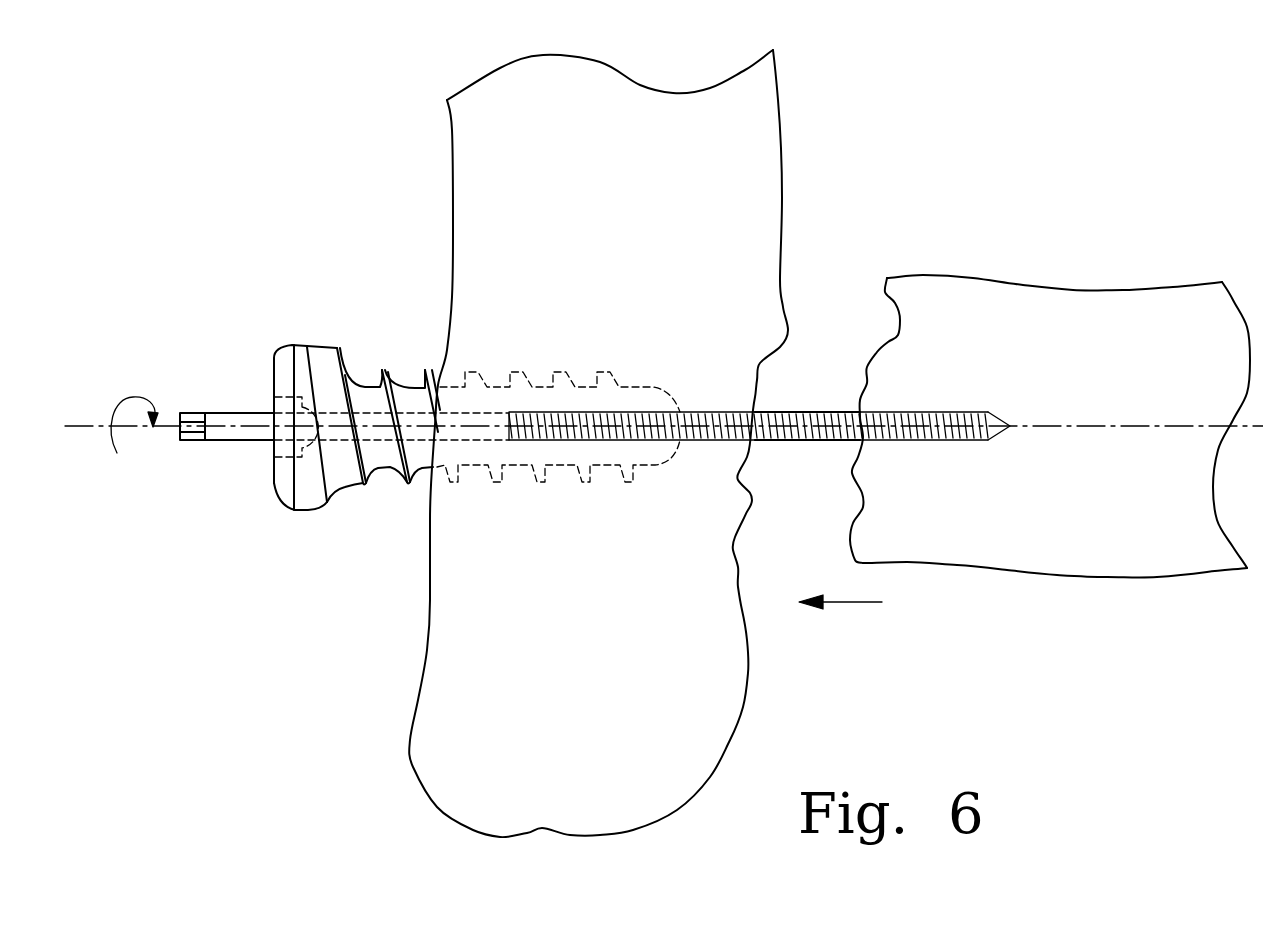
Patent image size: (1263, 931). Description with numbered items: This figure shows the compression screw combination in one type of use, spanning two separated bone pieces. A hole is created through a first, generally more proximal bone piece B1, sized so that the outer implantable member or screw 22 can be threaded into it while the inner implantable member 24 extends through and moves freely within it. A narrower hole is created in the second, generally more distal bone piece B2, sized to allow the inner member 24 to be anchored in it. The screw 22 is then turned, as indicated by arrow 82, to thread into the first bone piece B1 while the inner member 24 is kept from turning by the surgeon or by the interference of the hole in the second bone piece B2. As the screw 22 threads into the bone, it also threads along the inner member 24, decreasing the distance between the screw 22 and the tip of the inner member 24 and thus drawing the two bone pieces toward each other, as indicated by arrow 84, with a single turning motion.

The outer implantable member 22 is at (300, 363).
The inner implantable member 24 is at (827, 410).
The arrow 82 is at (140, 453).
The arrow 84 is at (851, 603).
The first bone piece B1 is at (475, 615).
The second bone piece B2 is at (1070, 537).